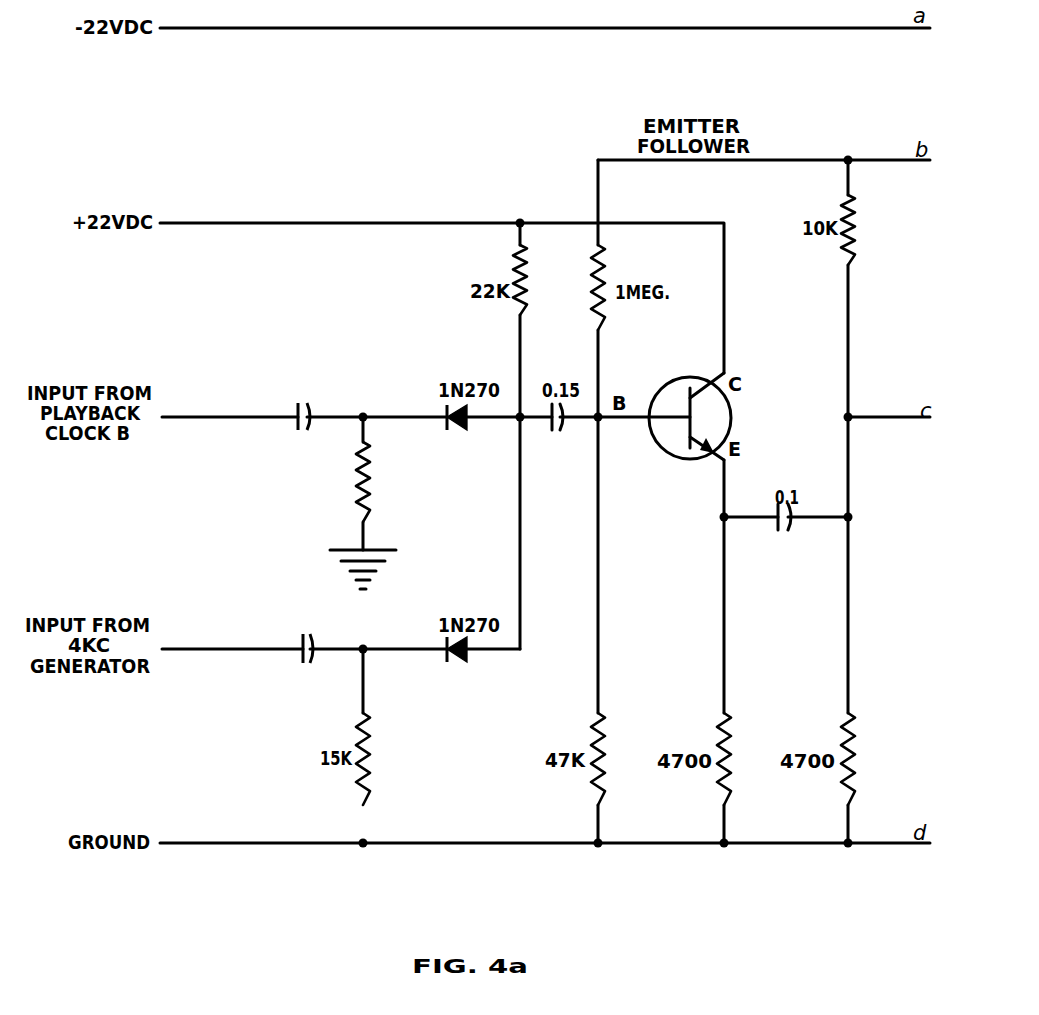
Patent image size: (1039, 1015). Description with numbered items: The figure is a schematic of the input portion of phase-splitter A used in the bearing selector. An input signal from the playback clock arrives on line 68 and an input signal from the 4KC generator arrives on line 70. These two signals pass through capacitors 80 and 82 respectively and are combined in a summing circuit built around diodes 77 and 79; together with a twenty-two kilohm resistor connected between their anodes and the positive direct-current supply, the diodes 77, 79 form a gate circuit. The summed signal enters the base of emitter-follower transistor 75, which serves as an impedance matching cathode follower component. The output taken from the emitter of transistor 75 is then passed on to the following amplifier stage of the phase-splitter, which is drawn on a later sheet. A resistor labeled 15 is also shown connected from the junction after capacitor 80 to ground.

The line 68 is at (216, 417).
The line 70 is at (216, 649).
The emitter-follower transistor 75 is at (653, 437).
The diode 77 is at (466, 428).
The diode 79 is at (466, 660).
The capacitor 80 is at (296, 424).
The capacitor 82 is at (300, 636).
The resistor 15 is at (380, 482).